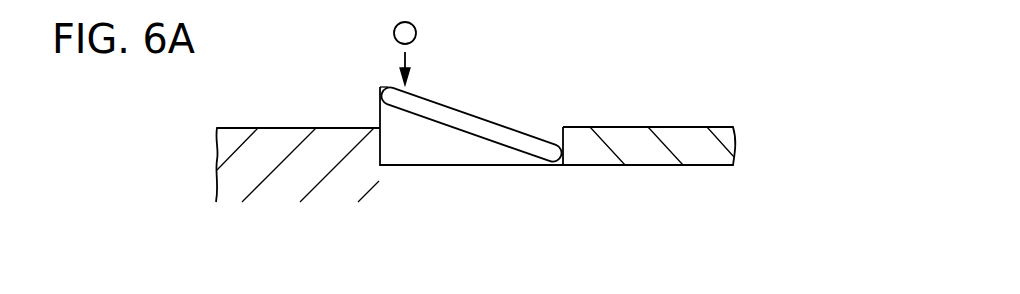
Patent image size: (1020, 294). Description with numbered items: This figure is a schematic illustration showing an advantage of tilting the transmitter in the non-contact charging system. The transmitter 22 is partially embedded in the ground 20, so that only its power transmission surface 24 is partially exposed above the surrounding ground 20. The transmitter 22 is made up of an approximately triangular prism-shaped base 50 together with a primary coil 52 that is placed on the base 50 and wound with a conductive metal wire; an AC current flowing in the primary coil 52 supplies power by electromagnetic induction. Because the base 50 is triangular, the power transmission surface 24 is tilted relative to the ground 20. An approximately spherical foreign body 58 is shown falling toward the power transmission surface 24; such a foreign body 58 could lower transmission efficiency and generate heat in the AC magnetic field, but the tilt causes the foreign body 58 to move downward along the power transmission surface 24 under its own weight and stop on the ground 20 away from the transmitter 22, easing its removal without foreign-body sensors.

The ground 20 is at (285, 127).
The transmitter 22 is at (508, 213).
The power transmission surface 24 is at (450, 109).
The base 50 is at (452, 153).
The primary coil 52 is at (482, 133).
The foreign body 58 is at (416, 29).